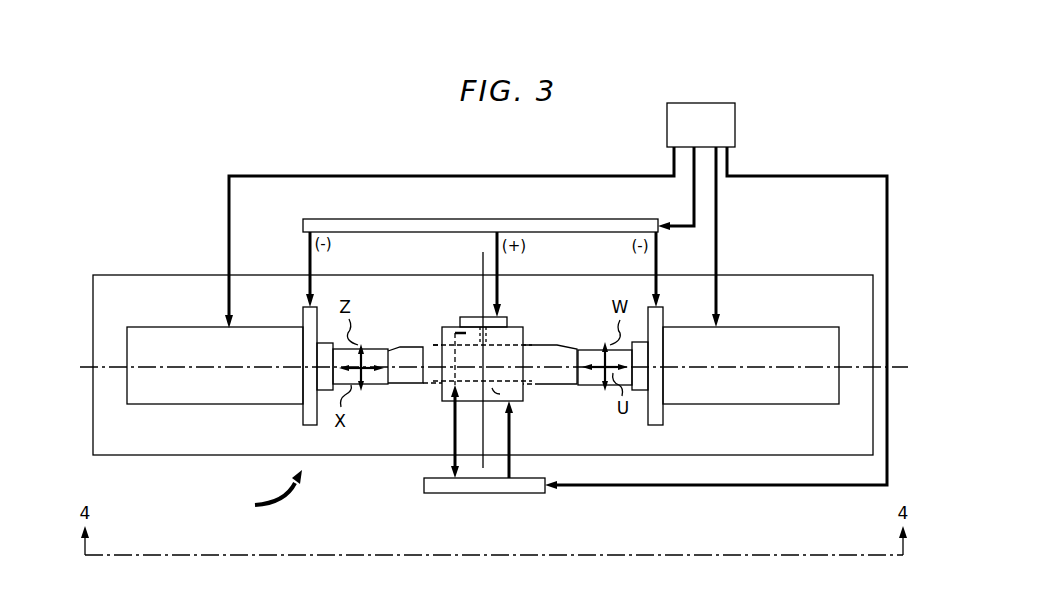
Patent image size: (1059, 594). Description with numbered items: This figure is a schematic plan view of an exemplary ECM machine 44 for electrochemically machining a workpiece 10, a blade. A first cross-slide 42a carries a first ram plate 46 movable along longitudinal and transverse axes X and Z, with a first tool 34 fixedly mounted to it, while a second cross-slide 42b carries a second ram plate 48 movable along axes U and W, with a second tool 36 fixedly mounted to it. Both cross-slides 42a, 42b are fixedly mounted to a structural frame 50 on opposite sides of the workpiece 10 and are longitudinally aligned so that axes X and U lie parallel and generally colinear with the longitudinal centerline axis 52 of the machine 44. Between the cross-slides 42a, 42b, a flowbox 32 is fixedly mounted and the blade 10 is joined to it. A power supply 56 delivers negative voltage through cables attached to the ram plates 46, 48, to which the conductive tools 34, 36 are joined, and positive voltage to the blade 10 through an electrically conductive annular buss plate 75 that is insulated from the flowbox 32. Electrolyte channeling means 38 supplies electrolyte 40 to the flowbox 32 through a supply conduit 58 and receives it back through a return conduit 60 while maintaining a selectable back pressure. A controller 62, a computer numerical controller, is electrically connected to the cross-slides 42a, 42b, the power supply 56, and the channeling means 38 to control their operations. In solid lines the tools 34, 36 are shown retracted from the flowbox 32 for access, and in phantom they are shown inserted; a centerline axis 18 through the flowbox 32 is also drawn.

The workpiece 10 is at (480, 324).
The machining axis centerline 18 is at (481, 265).
The flowbox 32 is at (522, 326).
The first tool 34 is at (379, 350).
The second tool 36 is at (556, 347).
The electrolyte channeling means 38 is at (490, 493).
The electrolyte 40 is at (505, 392).
The first cross-slide 42a is at (193, 382).
The second cross-slide 42b is at (773, 388).
The ECM machine 44 is at (263, 493).
The first ram plate 46 is at (311, 422).
The second ram plate 48 is at (665, 413).
The structural frame 50 is at (189, 292).
The longitudinal centerline axis 52 is at (820, 362).
The power supply 56 is at (441, 219).
The supply conduit 58 is at (512, 428).
The return conduit 60 is at (452, 418).
The controller 62 is at (690, 133).
The buss plate 75 is at (503, 318).